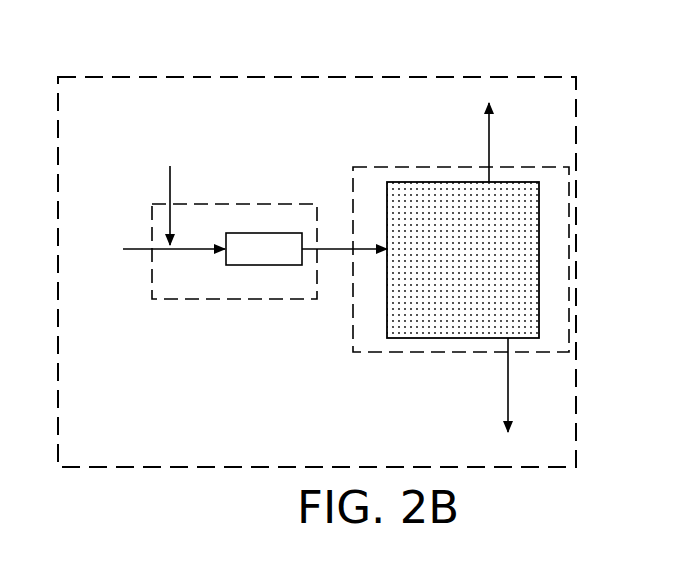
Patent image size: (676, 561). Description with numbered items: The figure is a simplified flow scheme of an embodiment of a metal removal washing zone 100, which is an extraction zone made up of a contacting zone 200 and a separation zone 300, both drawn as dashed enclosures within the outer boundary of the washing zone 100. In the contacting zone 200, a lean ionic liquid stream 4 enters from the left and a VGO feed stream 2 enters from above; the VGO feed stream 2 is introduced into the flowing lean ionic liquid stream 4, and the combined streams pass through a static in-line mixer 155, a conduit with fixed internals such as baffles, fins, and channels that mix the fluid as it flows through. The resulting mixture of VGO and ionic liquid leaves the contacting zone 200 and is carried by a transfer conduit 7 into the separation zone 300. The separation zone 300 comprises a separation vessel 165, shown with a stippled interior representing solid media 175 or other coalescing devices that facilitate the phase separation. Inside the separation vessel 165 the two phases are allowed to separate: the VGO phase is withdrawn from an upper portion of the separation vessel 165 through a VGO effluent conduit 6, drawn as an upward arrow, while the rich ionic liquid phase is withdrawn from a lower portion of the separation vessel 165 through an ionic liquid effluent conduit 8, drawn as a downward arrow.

The metal removal washing zone 100 is at (270, 72).
The contacting zone 200 is at (218, 299).
The static in-line mixer 155 is at (253, 232).
The lean ionic liquid stream 4 is at (142, 249).
The VGO feed stream 2 is at (170, 177).
The transfer conduit 7 is at (333, 252).
The separation zone 300 is at (387, 352).
The separation vessel 165 is at (418, 182).
The solid media 175 is at (477, 283).
The VGO effluent conduit 6 is at (489, 133).
The ionic liquid effluent conduit 8 is at (508, 382).